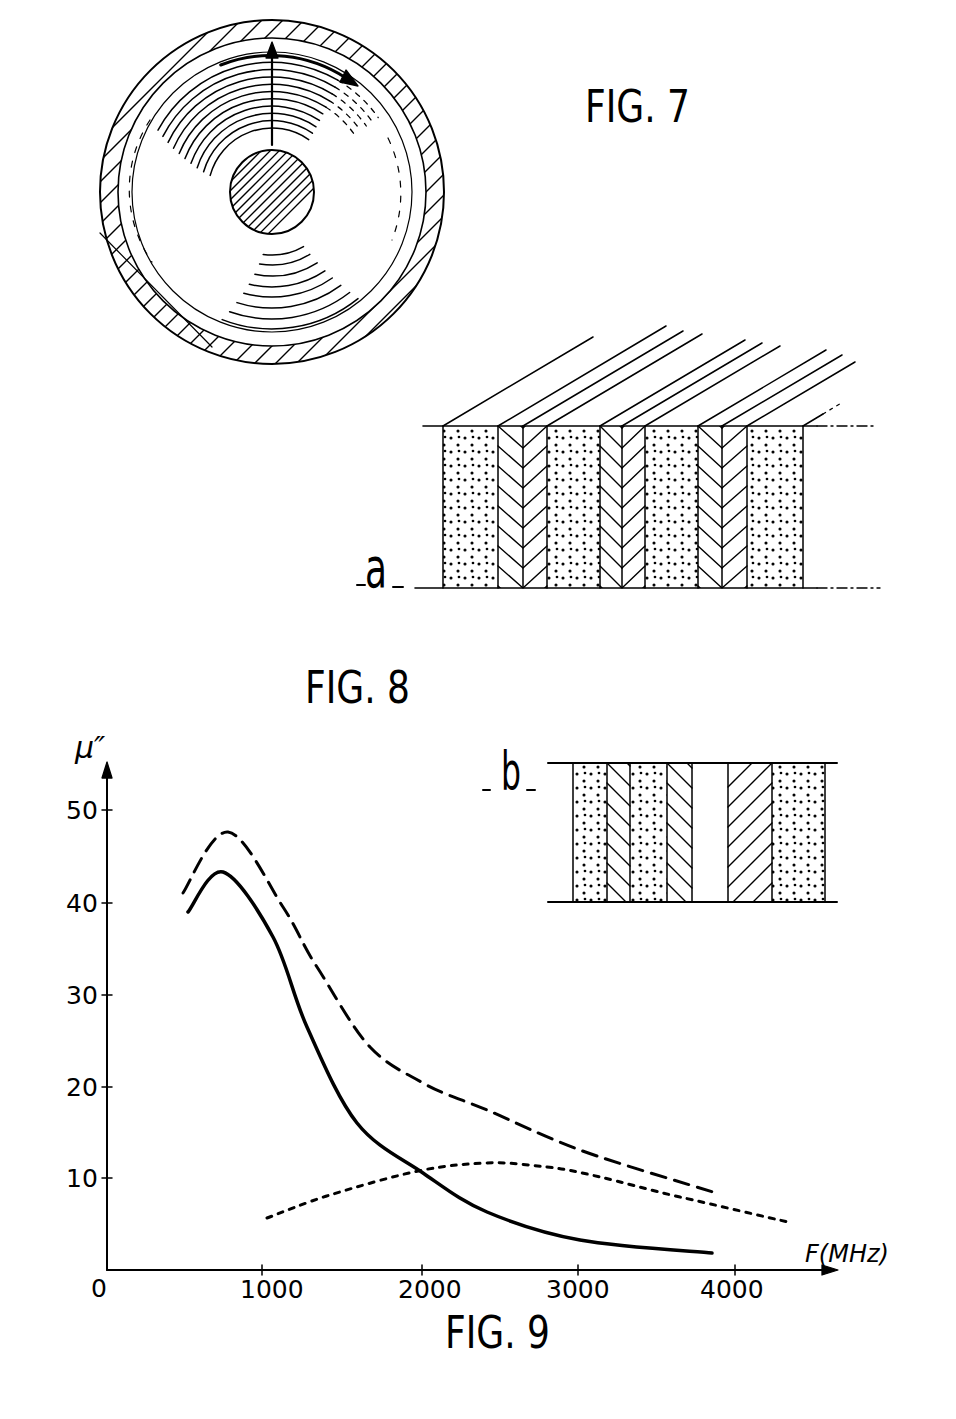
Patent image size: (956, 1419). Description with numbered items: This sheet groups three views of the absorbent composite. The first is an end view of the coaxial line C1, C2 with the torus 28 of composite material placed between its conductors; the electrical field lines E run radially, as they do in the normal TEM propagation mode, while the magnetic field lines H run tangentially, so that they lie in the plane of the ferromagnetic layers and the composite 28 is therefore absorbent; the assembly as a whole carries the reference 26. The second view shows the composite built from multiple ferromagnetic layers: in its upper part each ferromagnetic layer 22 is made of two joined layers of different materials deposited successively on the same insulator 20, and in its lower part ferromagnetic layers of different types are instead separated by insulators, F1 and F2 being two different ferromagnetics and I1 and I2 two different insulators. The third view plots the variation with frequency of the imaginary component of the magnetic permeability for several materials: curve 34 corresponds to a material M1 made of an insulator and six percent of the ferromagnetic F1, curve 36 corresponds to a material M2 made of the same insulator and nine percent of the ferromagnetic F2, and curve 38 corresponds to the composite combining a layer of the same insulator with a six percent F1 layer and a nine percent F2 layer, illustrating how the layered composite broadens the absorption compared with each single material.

In FIG. 7, the toroidal core element 26 is at (127, 84).
In FIG. 7, the torus 28 is at (363, 118).
In FIG. 7, the electrical field lines E is at (263, 87).
In FIG. 7, the magnetic field lines H is at (350, 44).
In FIG. 7, the coaxial line conductor C1 is at (433, 152).
In FIG. 7, the coaxial line conductor C2 is at (248, 213).
In FIG. 8, the insulator 20 is at (683, 580).
In FIG. 8, the ferromagnetic layer 22 is at (498, 594).
In FIG. 8, the first ferromagnetic F1 is at (680, 932).
In FIG. 8, the second ferromagnetic F2 is at (755, 902).
In FIG. 8, the first insulator I1 is at (650, 902).
In FIG. 8, the second insulator I2 is at (803, 902).
In FIG. 9, the curve 34 is at (303, 1030).
In FIG. 9, the curve 36 is at (558, 1172).
In FIG. 9, the curve 38 is at (293, 926).